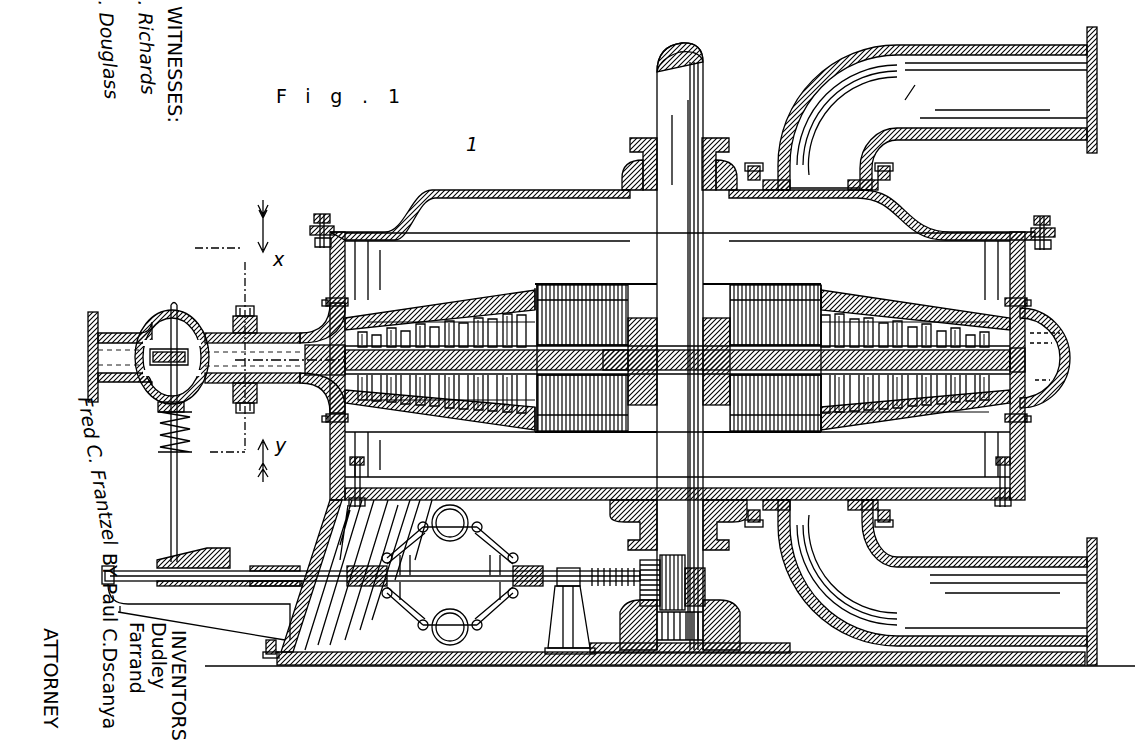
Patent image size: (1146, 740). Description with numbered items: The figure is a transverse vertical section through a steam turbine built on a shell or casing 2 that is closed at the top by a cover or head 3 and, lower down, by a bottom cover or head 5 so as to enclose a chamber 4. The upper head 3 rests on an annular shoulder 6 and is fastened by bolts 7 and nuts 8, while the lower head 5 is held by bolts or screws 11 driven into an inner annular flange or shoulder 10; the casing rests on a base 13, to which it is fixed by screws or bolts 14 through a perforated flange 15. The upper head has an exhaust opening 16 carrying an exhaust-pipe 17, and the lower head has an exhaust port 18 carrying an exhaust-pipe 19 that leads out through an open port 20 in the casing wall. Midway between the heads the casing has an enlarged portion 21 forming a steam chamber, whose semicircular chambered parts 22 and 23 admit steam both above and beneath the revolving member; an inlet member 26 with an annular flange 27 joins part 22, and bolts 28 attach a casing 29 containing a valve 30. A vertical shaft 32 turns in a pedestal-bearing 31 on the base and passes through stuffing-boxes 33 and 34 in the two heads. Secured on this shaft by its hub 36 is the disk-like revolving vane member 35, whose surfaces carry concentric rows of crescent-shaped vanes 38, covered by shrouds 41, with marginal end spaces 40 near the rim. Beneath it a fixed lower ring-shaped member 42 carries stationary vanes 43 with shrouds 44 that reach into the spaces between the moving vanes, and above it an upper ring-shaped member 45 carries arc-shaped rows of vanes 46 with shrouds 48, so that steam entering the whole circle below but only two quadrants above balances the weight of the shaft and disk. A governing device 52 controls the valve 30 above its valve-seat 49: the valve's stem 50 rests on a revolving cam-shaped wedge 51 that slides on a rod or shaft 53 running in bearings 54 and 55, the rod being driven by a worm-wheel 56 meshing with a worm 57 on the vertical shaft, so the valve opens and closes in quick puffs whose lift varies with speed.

The shell or casing 2 is at (1112, 347).
The cover or head 3 is at (522, 190).
The chamber 4 is at (677, 358).
The bottom cover or head 5 is at (554, 500).
The annular shoulder 6 is at (310, 233).
The bolts 7 is at (318, 248).
The nuts 8 is at (328, 223).
The inner annular flange or shoulder 10 is at (1000, 480).
The bolts or screws 11 is at (358, 504).
The base 13 is at (858, 662).
The screws or bolts 14 is at (266, 645).
The perforated flange 15 is at (268, 658).
The exhaust portion or opening 16 is at (846, 196).
The exhaust-pipe 17 is at (925, 117).
The exhaust port or opening 18 is at (840, 495).
The exhaust-pipe 19 is at (925, 573).
The open port 20 is at (1032, 556).
The enlarged portion 21 is at (336, 419).
The semicircular chambered part 22 is at (330, 303).
The semicircular chambered part 23 is at (1060, 343).
The inlet member 26 is at (262, 342).
The annular flange 27 is at (252, 316).
The bolts 28 is at (240, 312).
The casing 29 is at (120, 335).
The valve 30 is at (166, 330).
The pedestal-bearing 31 is at (706, 623).
The vertical shaft 32 is at (680, 346).
The stuffing-box 33 is at (636, 161).
The stuffing-box 34 is at (705, 534).
The revolving or movable vane member 35 is at (612, 396).
The hub 36 is at (738, 316).
The pockets or vanes 38 is at (420, 326).
The marginal end spaces 40 is at (1020, 375).
The shroud 41 is at (384, 332).
The lower ring-shaped member 42 is at (525, 422).
The stationary vanes 43 is at (436, 402).
The shroud 44 is at (465, 404).
The upper ring-shaped member 45 is at (545, 296).
The vanes 46 is at (463, 324).
The shrouds 48 is at (492, 320).
The valve-seat 49 is at (147, 392).
The stem 50 is at (178, 503).
The cam-shaped wedge 51 is at (207, 550).
The governing device 52 is at (450, 575).
The rod or shaft 53 is at (271, 571).
The bearing 54 is at (570, 570).
The bearing 55 is at (113, 566).
The worm-wheel 56 is at (671, 566).
The worm 57 is at (706, 589).